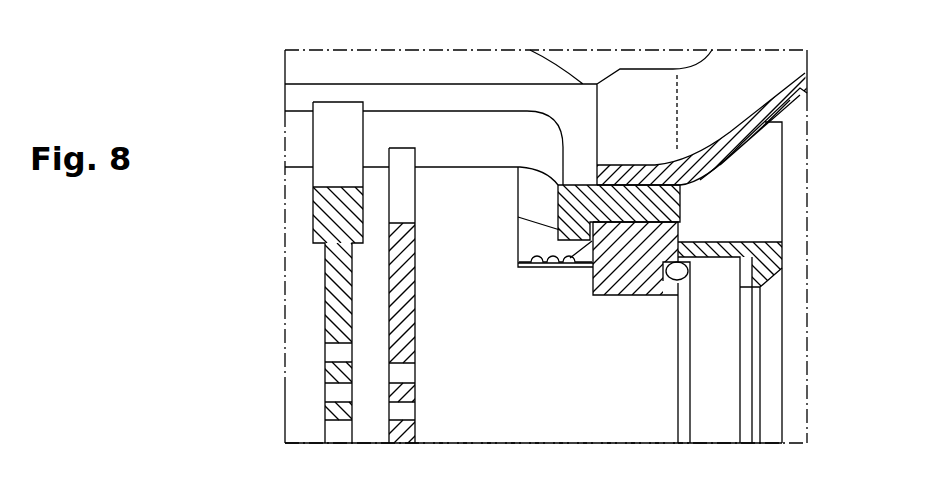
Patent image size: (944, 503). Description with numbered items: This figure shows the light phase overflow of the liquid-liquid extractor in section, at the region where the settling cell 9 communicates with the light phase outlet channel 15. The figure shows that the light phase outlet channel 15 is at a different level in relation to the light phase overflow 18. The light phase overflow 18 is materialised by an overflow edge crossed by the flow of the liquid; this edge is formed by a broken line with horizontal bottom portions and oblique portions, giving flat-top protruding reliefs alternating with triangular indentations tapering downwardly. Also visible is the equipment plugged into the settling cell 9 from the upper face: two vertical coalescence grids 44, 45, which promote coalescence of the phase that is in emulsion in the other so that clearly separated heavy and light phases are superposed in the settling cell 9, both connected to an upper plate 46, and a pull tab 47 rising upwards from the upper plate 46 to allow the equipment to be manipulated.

The settling cell 9 is at (580, 372).
The light phase outlet channel 15 is at (539, 232).
The light phase overflow 18 is at (547, 252).
The coalescence grid 44 is at (338, 292).
The coalescence grid 45 is at (398, 254).
The upper plate 46 is at (533, 98).
The pull tab 47 is at (785, 98).